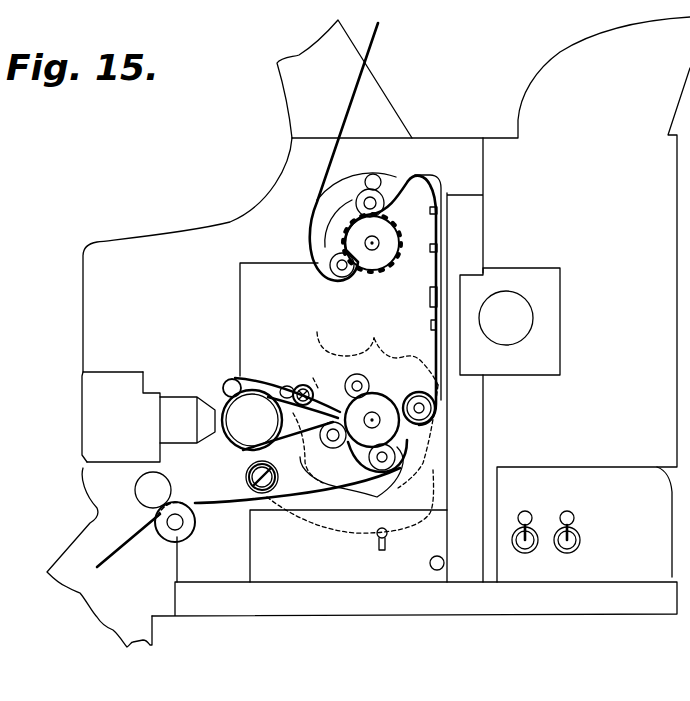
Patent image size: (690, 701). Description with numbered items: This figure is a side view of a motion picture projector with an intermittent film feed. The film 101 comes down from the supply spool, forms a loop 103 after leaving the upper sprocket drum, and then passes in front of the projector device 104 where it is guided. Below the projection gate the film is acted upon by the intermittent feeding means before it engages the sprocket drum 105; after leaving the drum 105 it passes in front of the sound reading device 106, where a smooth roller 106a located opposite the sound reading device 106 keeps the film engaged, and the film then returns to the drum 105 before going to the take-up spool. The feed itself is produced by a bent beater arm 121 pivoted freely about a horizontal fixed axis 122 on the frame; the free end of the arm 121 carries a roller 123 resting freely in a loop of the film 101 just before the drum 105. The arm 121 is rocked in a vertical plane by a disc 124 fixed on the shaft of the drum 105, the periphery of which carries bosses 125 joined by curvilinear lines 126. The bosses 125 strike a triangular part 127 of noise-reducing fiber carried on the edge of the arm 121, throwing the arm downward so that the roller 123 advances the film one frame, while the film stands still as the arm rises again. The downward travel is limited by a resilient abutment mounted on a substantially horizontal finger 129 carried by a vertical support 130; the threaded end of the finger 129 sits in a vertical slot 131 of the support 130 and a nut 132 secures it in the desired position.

The film 101 is at (352, 107).
The loop 103 is at (433, 160).
The projector device 104 is at (527, 258).
The sprocket drum 105 is at (372, 392).
The sound reading device 106 is at (182, 405).
The smooth roller 106a is at (242, 413).
The beater arm 121 is at (250, 510).
The horizontal fixed axis 122 is at (245, 476).
The roller 123 is at (443, 412).
The disc 124 is at (380, 367).
The bosses 125 is at (325, 347).
The curvilinear lines 126 is at (313, 377).
The triangular part 127 is at (343, 497).
The finger 129 is at (377, 541).
The vertical support 130 is at (260, 553).
The vertical slot 131 is at (386, 550).
The nut 132 is at (388, 535).